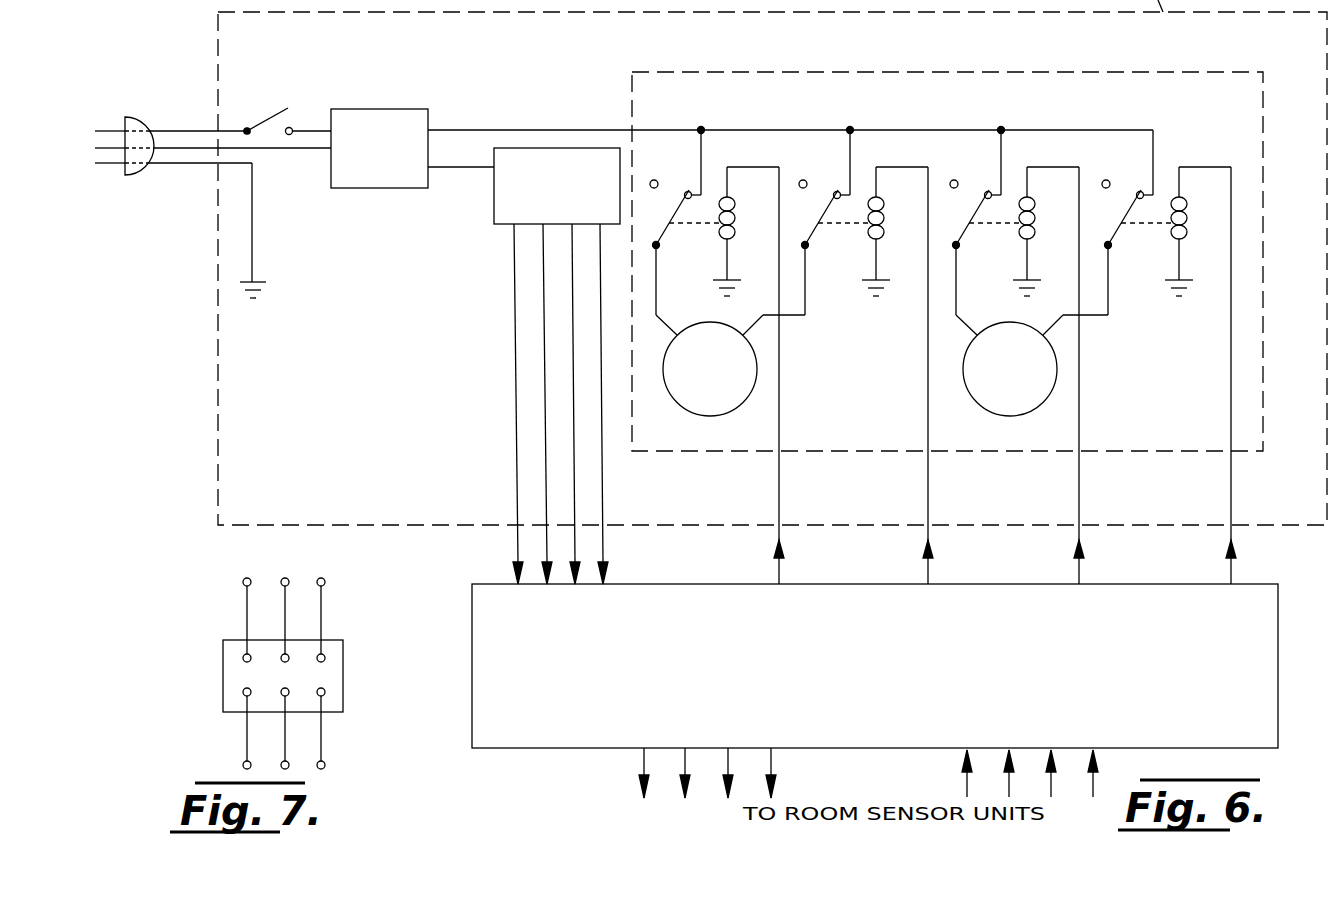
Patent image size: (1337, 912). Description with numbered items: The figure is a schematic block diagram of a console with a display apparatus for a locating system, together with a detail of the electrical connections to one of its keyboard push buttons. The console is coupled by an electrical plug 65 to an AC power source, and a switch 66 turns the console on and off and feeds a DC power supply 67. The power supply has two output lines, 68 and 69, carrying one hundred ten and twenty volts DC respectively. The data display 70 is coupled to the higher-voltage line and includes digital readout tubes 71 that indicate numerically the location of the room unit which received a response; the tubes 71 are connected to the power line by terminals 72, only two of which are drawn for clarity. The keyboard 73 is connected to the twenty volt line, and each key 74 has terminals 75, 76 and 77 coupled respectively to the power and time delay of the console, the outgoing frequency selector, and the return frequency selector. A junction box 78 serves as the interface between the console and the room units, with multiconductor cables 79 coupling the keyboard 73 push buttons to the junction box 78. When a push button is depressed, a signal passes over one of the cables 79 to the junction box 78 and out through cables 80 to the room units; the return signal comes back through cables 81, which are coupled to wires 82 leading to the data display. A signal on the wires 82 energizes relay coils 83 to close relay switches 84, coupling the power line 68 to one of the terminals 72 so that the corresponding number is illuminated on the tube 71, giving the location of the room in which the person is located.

In FIG. 6, the electrical plug 65 is at (142, 118).
In FIG. 6, the switch 66 is at (247, 128).
In FIG. 6, the DC power supply 67 is at (388, 108).
In FIG. 6, the power supply output line 68 is at (545, 130).
In FIG. 6, the power supply output line 69 is at (449, 167).
In FIG. 6, the data display 70 is at (1012, 68).
In FIG. 6, the digital readout tube 71 is at (697, 323).
In FIG. 6, the terminal 72 is at (657, 320).
In FIG. 6, the keyboard 73 is at (494, 215).
In FIG. 7, the key 74 is at (343, 680).
In FIG. 7, the key terminal 75 is at (246, 578).
In FIG. 7, the key terminal 76 is at (286, 578).
In FIG. 7, the key terminal 77 is at (323, 578).
In FIG. 6, the junction box 78 is at (472, 642).
In FIG. 6, the multiconductor cable 79 is at (572, 372).
In FIG. 6, the cable 80 is at (772, 763).
In FIG. 6, the cable 81 is at (967, 785).
In FIG. 6, the wire 82 is at (783, 483).
In FIG. 6, the relay coil 83 is at (756, 220).
In FIG. 6, the relay switch 84 is at (664, 232).